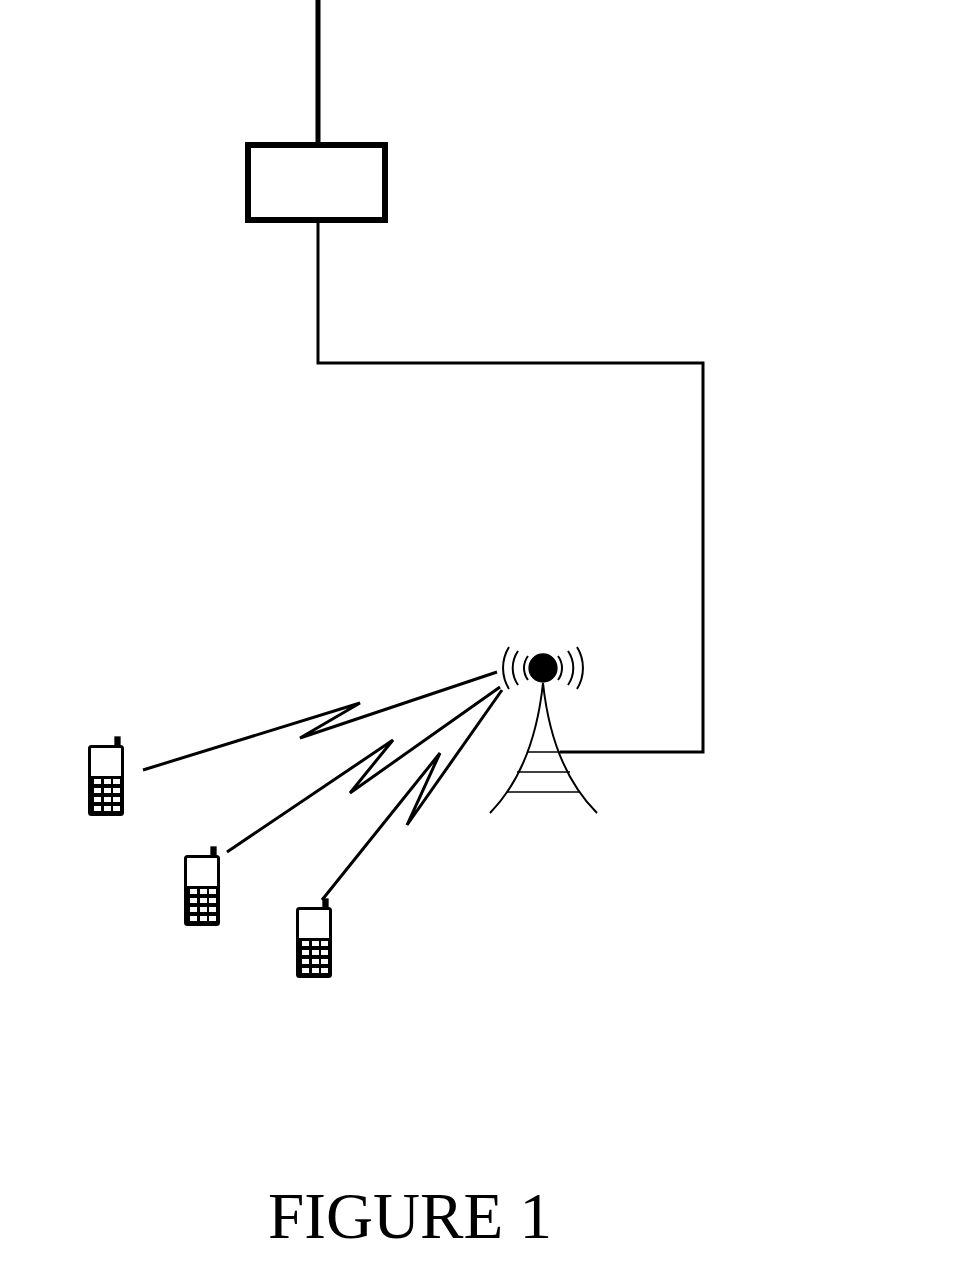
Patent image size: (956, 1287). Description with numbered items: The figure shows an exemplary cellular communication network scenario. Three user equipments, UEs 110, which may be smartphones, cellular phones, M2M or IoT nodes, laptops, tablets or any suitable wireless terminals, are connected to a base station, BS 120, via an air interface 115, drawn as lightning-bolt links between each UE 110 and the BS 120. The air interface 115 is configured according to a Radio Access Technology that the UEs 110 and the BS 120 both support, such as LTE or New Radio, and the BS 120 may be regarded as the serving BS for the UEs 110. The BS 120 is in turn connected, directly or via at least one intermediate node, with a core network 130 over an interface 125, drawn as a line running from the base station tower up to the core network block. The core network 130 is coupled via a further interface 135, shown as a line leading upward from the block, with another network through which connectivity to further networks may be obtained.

The UE 110 is at (112, 815).
The air interface 115 is at (320, 712).
The BS 120 is at (580, 785).
The interface 125 is at (703, 514).
The core network 130 is at (347, 199).
The interface 135 is at (320, 57).